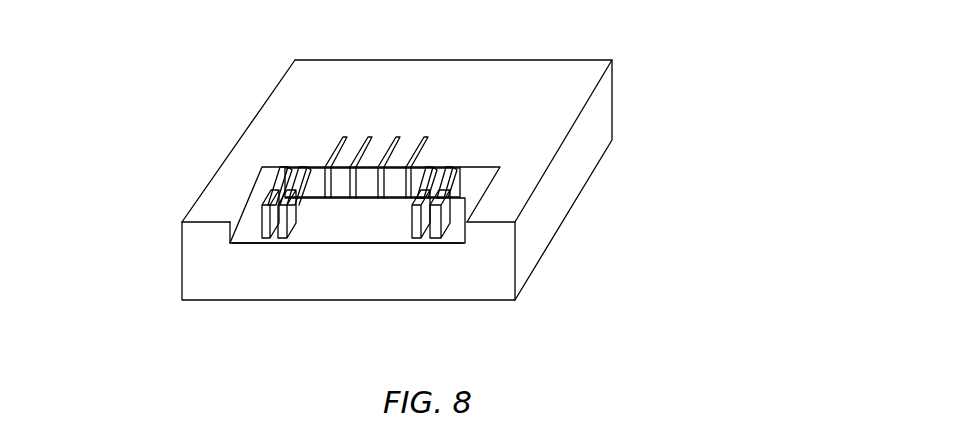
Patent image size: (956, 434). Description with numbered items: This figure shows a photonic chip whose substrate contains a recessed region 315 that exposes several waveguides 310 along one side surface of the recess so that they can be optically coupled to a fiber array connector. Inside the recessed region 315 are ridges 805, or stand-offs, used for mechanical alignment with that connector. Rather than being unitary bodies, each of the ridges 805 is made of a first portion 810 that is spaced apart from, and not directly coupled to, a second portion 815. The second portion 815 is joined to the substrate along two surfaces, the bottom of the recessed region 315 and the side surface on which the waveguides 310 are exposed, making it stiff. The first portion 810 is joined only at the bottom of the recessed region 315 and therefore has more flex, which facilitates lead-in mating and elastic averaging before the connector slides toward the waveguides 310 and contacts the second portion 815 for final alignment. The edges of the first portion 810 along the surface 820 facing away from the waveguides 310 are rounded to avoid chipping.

The waveguides 310 is at (345, 137).
The recessed region 315 is at (381, 225).
The ridges 805 is at (300, 166).
The first portion 810 is at (297, 219).
The second portion 815 is at (312, 202).
The surface 820 is at (281, 236).